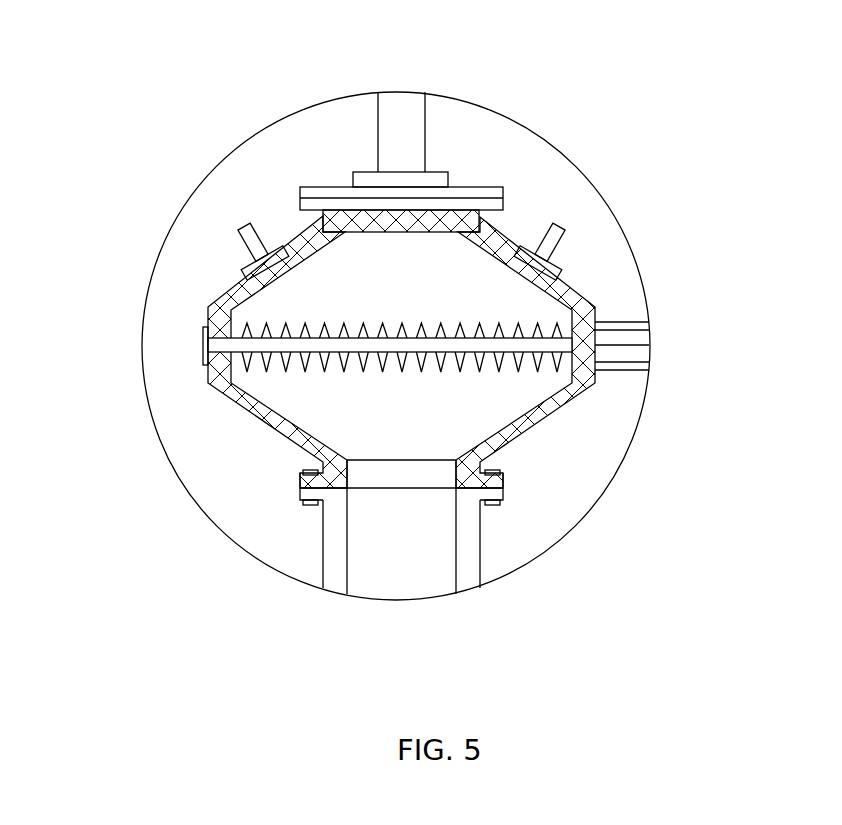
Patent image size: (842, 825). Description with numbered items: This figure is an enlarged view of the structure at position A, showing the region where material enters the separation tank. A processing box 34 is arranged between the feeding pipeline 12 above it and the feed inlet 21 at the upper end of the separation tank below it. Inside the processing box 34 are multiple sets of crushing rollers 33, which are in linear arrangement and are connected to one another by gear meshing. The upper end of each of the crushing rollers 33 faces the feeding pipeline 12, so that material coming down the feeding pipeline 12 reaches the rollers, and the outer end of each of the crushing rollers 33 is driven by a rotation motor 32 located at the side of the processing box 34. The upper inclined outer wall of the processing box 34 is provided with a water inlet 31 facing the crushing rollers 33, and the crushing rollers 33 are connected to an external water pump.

The position A is at (160, 250).
The feeding pipeline 12 is at (393, 120).
The feed inlet 21 is at (433, 555).
The water inlet 31 is at (566, 231).
The rotation motor 32 is at (630, 345).
The crushing rollers 33 is at (347, 337).
The processing box 34 is at (540, 420).